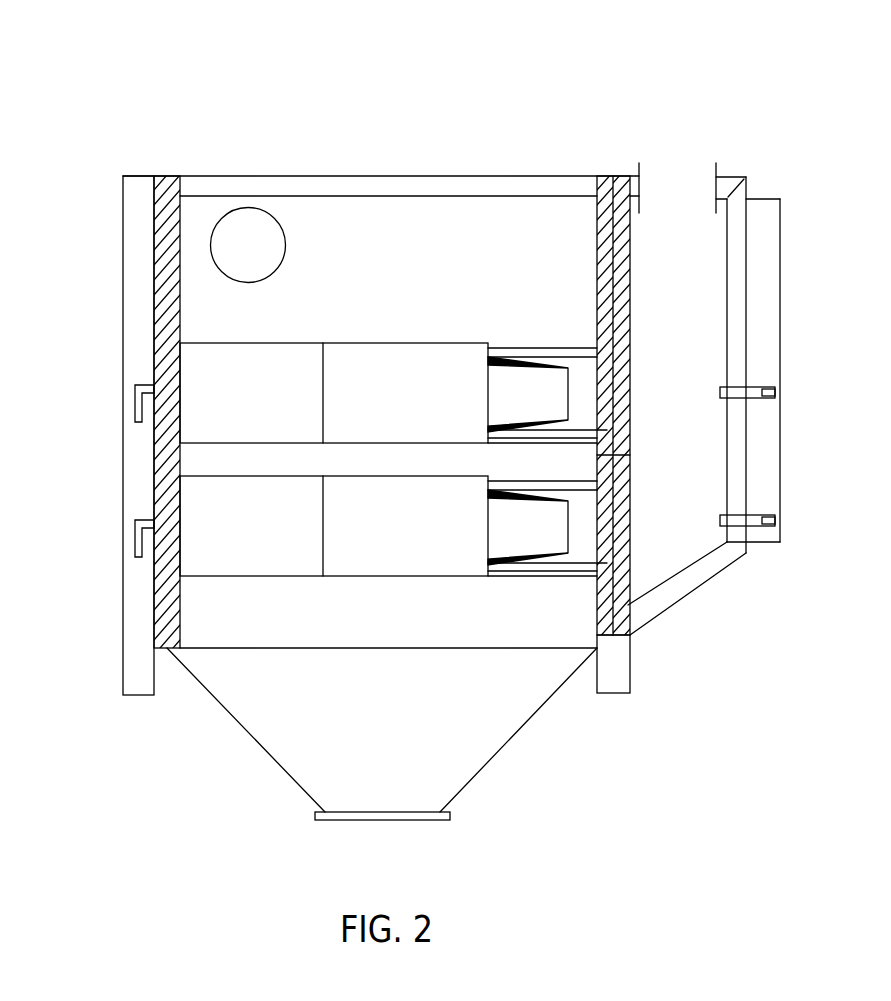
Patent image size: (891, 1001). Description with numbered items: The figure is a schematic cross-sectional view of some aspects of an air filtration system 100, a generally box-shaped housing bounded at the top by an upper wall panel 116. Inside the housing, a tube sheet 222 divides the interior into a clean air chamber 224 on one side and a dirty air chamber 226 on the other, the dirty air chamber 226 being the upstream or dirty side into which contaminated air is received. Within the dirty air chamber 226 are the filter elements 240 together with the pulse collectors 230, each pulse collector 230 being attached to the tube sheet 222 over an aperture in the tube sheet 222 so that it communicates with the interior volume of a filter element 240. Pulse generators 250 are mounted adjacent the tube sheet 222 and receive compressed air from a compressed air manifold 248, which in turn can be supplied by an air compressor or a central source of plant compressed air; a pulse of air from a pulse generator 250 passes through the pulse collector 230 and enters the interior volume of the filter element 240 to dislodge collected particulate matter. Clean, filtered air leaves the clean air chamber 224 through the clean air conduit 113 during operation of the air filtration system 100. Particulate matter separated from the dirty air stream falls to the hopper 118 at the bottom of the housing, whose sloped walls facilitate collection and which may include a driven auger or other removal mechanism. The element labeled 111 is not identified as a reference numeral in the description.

The air filtration system 100 is at (757, 76).
The port 111 is at (238, 225).
The clean air conduit 113 is at (670, 172).
The upper wall panel 116 is at (360, 175).
The hopper 118 is at (310, 755).
The tube sheet 222 is at (593, 383).
The clean air chamber 224 is at (696, 487).
The dirty air chamber 226 is at (322, 294).
The pulse collector 230 is at (528, 360).
The filter element 240 is at (196, 366).
The compressed air manifold 248 is at (767, 443).
The pulse generator 250 is at (768, 386).